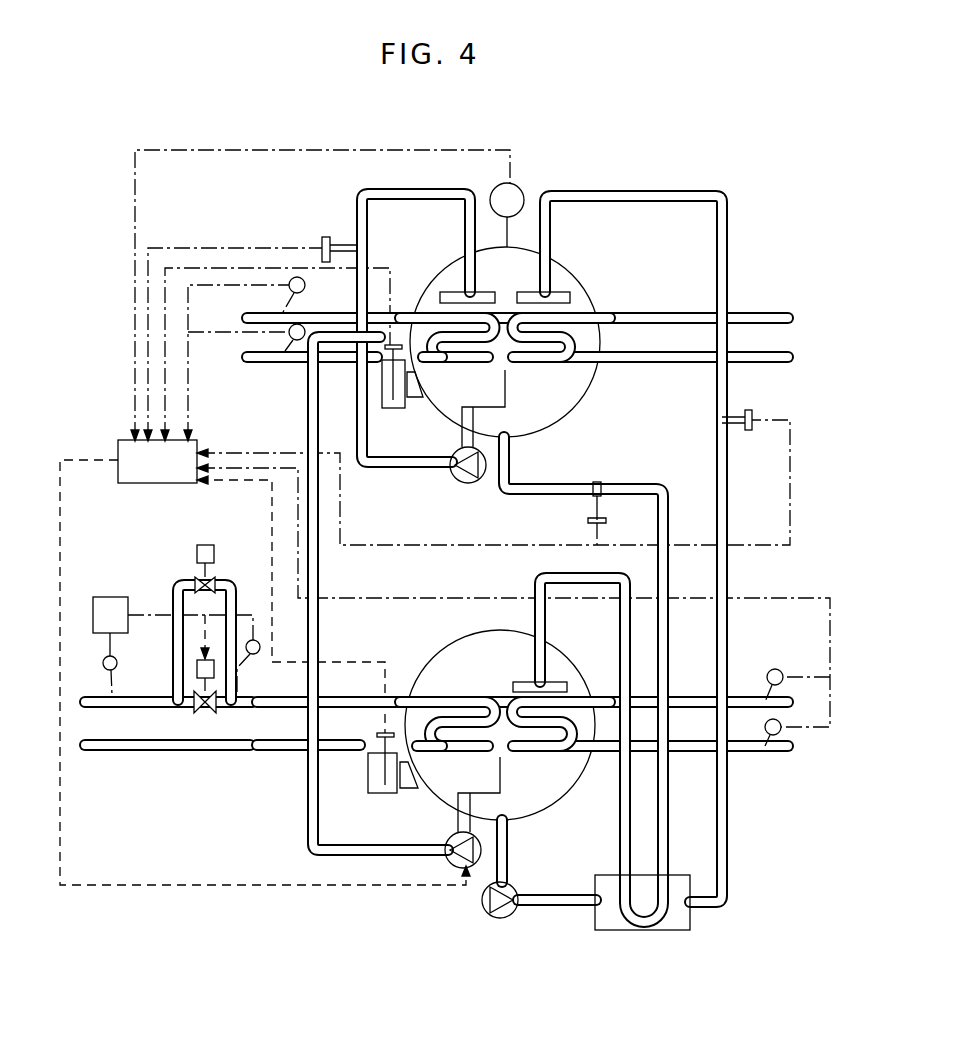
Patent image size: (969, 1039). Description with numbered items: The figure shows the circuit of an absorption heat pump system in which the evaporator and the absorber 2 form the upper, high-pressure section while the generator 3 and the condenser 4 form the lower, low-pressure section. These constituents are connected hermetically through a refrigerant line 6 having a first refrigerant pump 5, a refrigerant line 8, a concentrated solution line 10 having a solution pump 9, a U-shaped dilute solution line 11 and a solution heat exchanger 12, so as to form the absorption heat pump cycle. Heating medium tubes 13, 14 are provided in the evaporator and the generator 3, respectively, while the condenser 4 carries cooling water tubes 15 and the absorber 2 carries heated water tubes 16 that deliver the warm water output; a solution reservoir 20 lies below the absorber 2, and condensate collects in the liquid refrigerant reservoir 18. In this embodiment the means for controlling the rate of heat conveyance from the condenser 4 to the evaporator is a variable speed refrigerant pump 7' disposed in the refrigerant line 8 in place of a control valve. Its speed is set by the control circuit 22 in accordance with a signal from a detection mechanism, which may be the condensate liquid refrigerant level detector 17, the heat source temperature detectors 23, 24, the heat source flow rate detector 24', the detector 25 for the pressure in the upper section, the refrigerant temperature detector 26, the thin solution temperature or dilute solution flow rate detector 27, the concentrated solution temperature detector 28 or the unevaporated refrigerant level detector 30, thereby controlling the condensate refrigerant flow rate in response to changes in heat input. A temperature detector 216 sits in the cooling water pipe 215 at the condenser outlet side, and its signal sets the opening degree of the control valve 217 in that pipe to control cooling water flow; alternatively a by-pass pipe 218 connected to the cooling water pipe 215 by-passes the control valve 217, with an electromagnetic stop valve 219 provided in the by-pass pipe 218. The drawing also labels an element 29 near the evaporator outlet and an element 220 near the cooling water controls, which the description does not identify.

The absorber 2 is at (565, 290).
The generator 3 is at (565, 667).
The condenser 4 is at (443, 668).
The first refrigerant pump 5 is at (458, 482).
The refrigerant line 6 is at (440, 288).
The variable speed refrigerant pump 7' is at (439, 860).
The refrigerant line 8 is at (307, 633).
The solution pump 9 is at (484, 912).
The concentrated solution line 10 is at (727, 576).
The U-shaped dilute solution line 11 is at (667, 645).
The solution heat exchanger 12 is at (638, 930).
The heating medium tube 13 is at (282, 362).
The heating medium tube 14 is at (750, 756).
The cooling water tubes 15 is at (278, 752).
The heated water tubes 16 is at (755, 314).
The condensate liquid refrigerant level detector 17 is at (368, 776).
The liquid refrigerant reservoir 18 is at (422, 786).
The solution reservoir 20 is at (530, 426).
The control circuit 22 is at (125, 477).
The heat source temperature detector 23 is at (305, 287).
The heat source temperature detector 24 is at (778, 662).
The heat source flow rate detector 24' is at (801, 743).
The pressure detector 25 is at (520, 192).
The refrigerant temperature detector 26 is at (326, 236).
The thin solution temperature detector or dilute solution flow rate detector 27 is at (588, 520).
The concentrated solution temperature detector 28 is at (750, 432).
The partition 29 is at (445, 388).
The unevaporated refrigerant level detector 30 is at (388, 408).
The cooling water pipe 215 is at (165, 752).
The temperature detector 216 is at (103, 660).
The control valve 217 is at (198, 712).
The by-pass pipe 218 is at (232, 583).
The electromagnetic stop valve 219 is at (205, 545).
The controller 220 is at (108, 603).